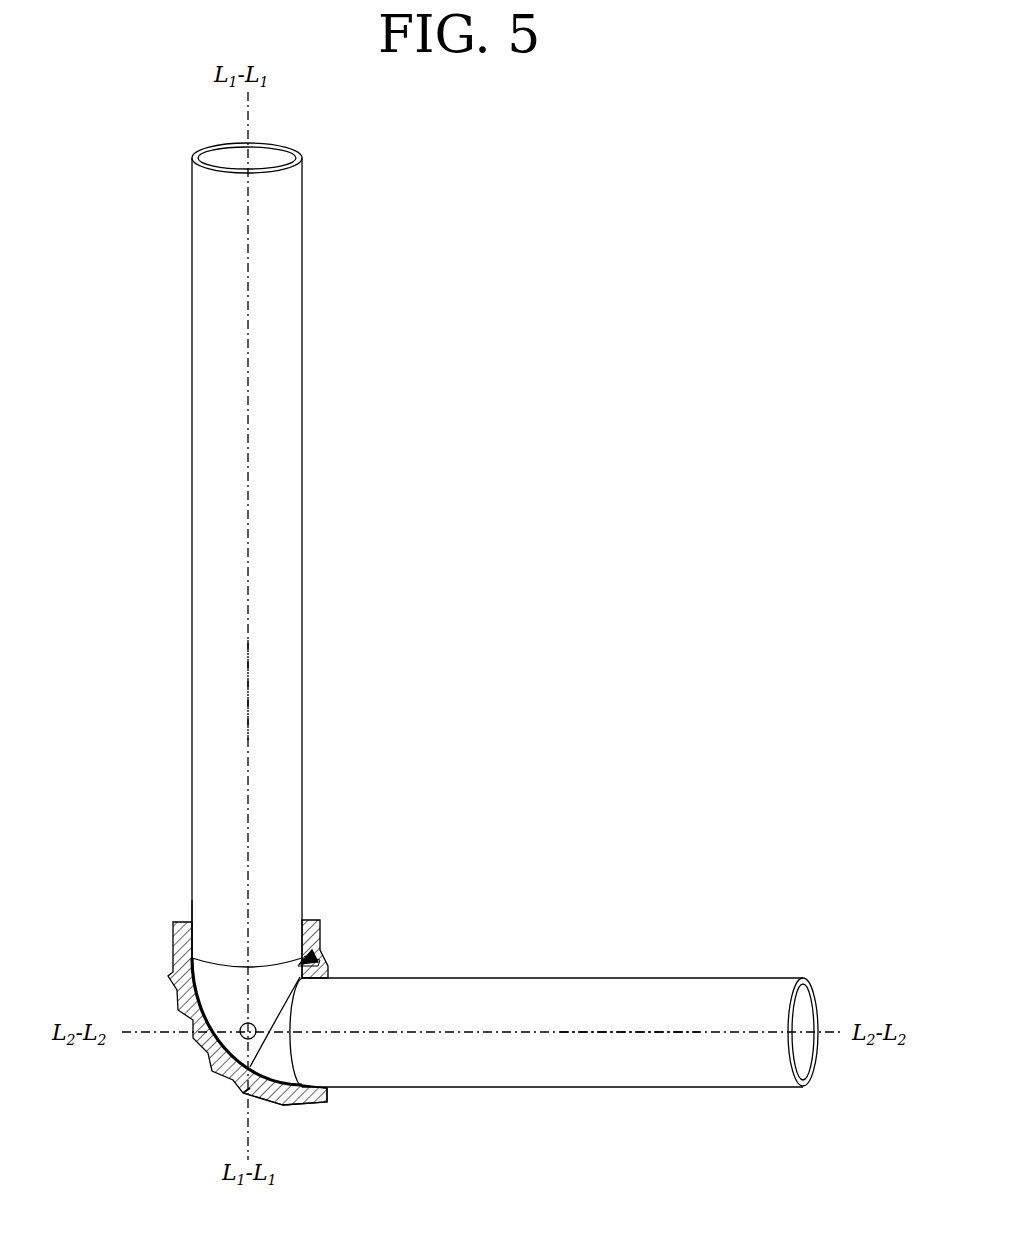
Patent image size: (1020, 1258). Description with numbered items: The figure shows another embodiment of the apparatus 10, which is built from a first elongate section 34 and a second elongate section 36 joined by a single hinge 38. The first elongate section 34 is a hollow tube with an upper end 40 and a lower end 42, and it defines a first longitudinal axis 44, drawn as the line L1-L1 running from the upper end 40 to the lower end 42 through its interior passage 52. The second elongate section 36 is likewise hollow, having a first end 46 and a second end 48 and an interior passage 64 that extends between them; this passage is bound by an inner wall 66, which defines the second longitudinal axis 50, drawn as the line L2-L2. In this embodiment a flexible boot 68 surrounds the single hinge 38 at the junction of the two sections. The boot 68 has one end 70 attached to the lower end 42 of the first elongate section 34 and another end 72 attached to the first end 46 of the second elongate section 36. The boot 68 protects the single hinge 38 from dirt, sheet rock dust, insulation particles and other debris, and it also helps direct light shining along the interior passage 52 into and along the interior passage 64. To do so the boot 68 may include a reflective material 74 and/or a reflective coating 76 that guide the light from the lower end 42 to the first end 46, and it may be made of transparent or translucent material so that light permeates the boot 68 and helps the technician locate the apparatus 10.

The apparatus 10 is at (578, 240).
The first elongate section 34 is at (302, 587).
The second elongate section 36 is at (512, 978).
The single hinge 38 is at (224, 1046).
The upper end 40 is at (192, 246).
The lower end 42 is at (192, 905).
The first longitudinal axis 44 is at (248, 692).
The first end 46 is at (392, 1090).
The second end 48 is at (733, 1088).
The second longitudinal axis 50 is at (508, 1040).
The interior passage 52 is at (258, 166).
The interior passage 64 is at (800, 1012).
The inner wall 66 is at (816, 1062).
The flexible boot 68 is at (306, 958).
The one end 70 is at (176, 948).
The another end 72 is at (312, 1107).
The reflective material 74 is at (280, 1108).
The reflective coating 76 is at (300, 962).